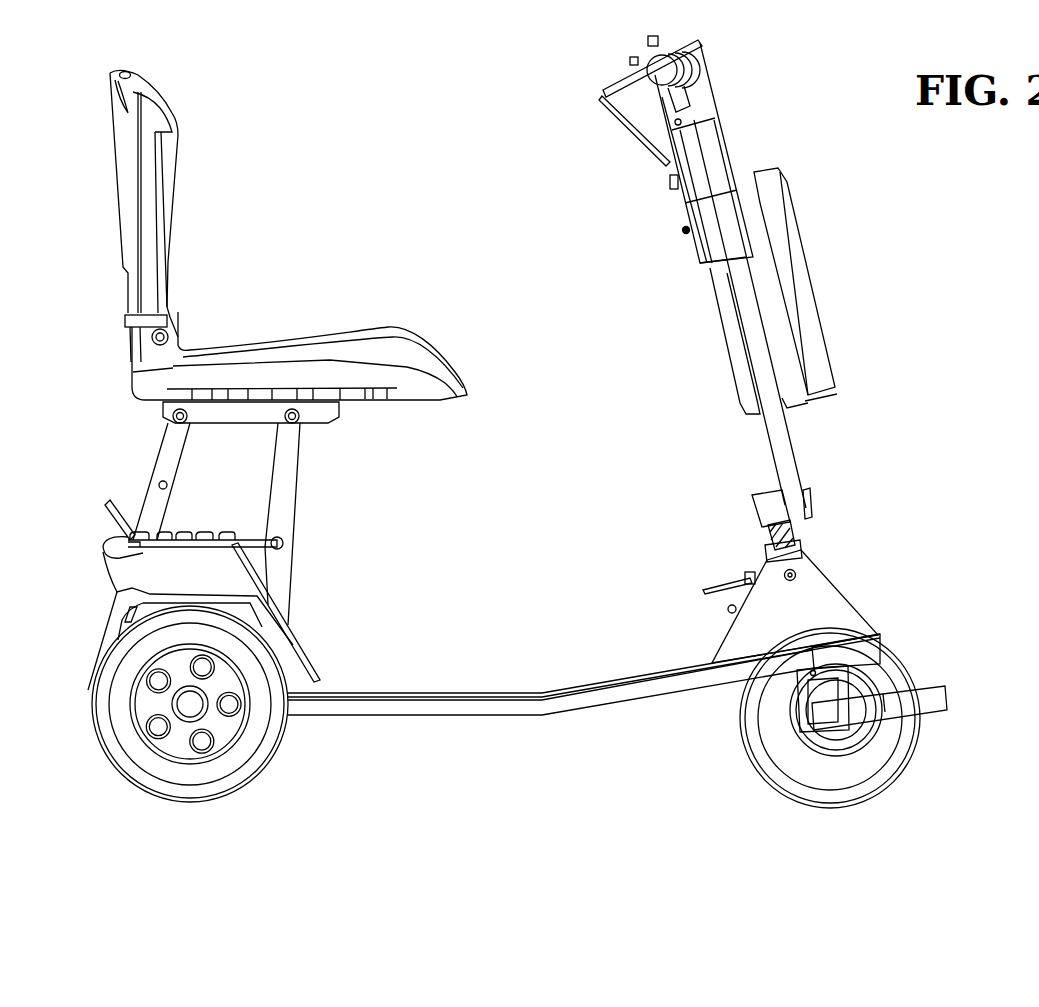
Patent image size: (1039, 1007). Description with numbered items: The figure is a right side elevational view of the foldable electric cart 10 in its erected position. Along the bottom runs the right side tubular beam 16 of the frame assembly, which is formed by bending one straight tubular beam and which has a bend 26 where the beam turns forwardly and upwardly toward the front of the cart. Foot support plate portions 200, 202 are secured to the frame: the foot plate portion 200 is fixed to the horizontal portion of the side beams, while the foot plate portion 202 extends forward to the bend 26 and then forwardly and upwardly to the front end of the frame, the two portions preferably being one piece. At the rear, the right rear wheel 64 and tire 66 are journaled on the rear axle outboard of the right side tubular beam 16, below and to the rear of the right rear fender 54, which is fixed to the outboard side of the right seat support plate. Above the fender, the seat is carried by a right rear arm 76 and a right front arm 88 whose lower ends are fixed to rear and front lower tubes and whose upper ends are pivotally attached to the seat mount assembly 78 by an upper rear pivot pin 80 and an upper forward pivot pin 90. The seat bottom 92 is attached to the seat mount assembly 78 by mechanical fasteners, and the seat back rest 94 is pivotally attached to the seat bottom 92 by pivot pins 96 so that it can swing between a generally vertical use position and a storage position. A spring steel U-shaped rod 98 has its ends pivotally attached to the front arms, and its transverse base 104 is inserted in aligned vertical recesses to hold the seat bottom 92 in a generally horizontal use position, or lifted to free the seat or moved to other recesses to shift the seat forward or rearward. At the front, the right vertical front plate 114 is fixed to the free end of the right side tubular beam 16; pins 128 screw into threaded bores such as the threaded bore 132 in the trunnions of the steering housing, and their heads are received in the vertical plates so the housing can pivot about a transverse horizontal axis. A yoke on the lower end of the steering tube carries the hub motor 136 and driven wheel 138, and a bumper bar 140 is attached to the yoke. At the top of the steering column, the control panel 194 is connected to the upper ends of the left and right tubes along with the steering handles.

The foldable electric cart 10 is at (430, 168).
The right side tubular beam 16 is at (470, 717).
The bend 26 is at (540, 717).
The right rear fender 54 is at (150, 592).
The right rear wheel 64 is at (228, 733).
The tire 66 is at (172, 782).
The right rear arm 76 is at (168, 452).
The seat mount assembly 78 is at (352, 413).
The upper rear pivot pin 80 is at (172, 418).
The right front arm 88 is at (285, 505).
The upper forward pivot pin 90 is at (300, 418).
The seat bottom 92 is at (345, 330).
The seat back rest 94 is at (172, 167).
The pivot pins 96 is at (168, 333).
The spring steel U-shaped rod 98 is at (140, 550).
The transverse base 104 is at (112, 540).
The right vertical front plate 114 is at (820, 560).
The pins 128 is at (810, 560).
The threaded bore 132 is at (797, 577).
The hub motor 136 is at (772, 735).
The driven wheel 138 is at (766, 795).
The bumper bar 140 is at (948, 700).
The control panel 194 is at (718, 88).
The foot support plate portion 200 is at (446, 692).
The foot support plate portion 202 is at (602, 680).